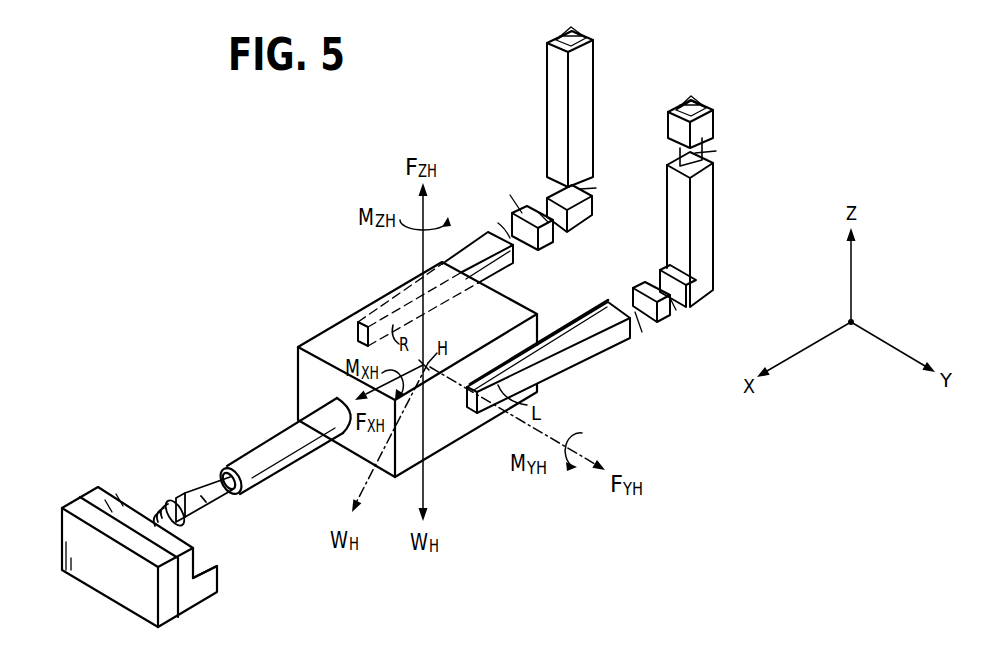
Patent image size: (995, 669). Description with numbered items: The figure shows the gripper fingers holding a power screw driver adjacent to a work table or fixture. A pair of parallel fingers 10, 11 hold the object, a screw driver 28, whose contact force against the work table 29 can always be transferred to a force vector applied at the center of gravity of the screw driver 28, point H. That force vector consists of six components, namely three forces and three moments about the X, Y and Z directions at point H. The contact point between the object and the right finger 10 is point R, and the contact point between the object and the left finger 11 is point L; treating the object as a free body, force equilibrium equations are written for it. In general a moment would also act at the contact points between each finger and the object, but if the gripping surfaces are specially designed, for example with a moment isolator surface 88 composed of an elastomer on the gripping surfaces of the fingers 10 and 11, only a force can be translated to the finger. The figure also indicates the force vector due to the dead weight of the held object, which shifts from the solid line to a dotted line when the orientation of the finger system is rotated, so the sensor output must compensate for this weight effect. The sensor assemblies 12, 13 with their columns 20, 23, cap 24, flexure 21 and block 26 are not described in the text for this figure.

The right finger 10 is at (468, 256).
The left finger 11 is at (588, 352).
The first force sensor 12 is at (522, 152).
The second force sensor 13 is at (694, 256).
The sensor column 20 is at (705, 225).
The flexure plate 21 is at (540, 243).
The sensor column 23 is at (553, 98).
The sensor cap 24 is at (707, 125).
The coupling block 26 is at (647, 285).
The screw driver 28 is at (222, 345).
The work table 29 is at (193, 597).
The moment isolator surface 88 is at (488, 270).